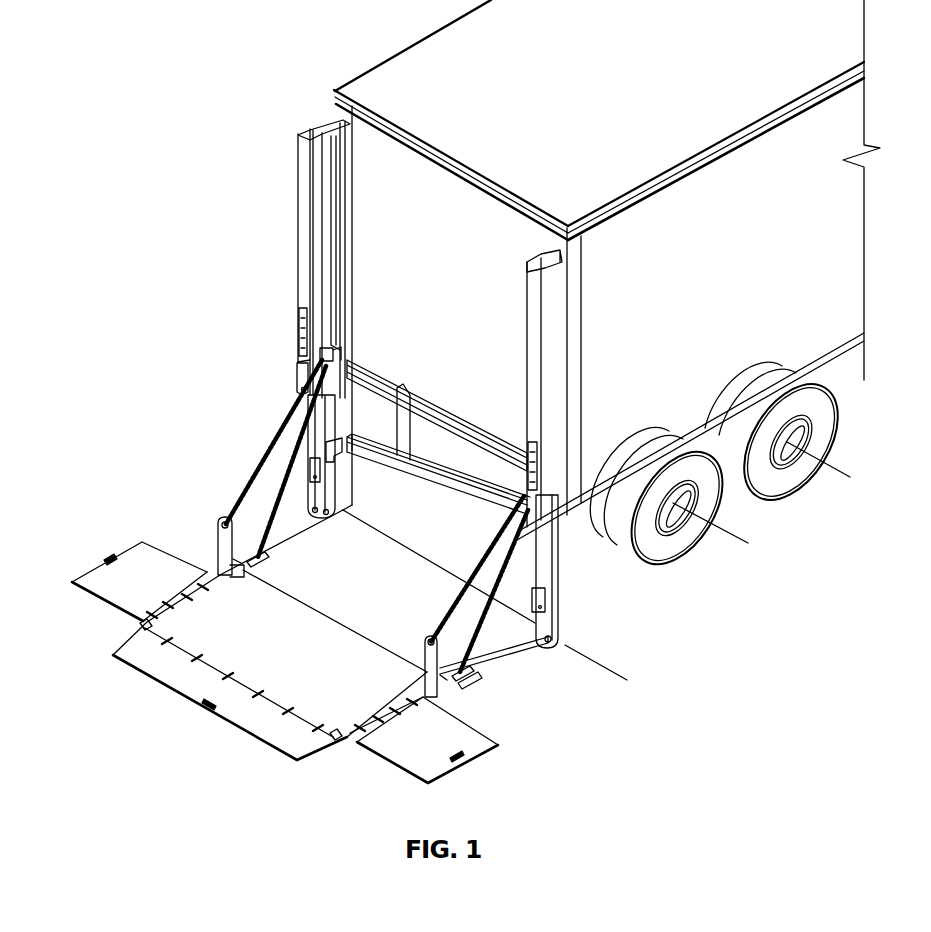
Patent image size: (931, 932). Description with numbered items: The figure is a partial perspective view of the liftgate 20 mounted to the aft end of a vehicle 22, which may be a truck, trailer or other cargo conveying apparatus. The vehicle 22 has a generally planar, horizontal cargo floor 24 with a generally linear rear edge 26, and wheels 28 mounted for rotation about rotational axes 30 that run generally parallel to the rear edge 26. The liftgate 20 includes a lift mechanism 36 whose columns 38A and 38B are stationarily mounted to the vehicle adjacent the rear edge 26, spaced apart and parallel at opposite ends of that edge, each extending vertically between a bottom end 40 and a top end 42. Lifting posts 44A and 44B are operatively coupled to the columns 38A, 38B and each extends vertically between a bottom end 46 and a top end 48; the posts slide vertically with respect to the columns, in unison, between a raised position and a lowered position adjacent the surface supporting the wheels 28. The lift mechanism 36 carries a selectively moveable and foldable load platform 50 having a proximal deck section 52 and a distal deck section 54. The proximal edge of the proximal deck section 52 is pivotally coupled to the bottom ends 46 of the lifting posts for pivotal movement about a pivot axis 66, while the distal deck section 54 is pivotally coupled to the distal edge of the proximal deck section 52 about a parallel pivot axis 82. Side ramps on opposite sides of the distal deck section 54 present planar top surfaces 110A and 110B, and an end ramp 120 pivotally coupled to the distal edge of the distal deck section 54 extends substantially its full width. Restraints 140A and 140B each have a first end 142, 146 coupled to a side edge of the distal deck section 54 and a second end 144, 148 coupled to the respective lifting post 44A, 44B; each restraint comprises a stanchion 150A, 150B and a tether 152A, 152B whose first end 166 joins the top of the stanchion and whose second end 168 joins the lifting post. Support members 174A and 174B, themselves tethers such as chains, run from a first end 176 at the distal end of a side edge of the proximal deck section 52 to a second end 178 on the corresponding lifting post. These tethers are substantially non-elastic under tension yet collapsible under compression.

The liftgate 20 is at (355, 465).
The vehicle 22 is at (404, 40).
The cargo floor 24 is at (450, 320).
The rear edge 26 is at (438, 437).
The wheels 28 is at (797, 492).
The rotational axes 30 is at (830, 470).
The lift mechanism 36 is at (313, 260).
The column 38A is at (297, 220).
The column 38B is at (562, 352).
The bottom end 40 is at (296, 380).
The top end 42 is at (306, 130).
The lifting post 44A is at (326, 422).
The lifting post 44B is at (560, 588).
The bottom end 46 is at (333, 510).
The top end 48 is at (335, 320).
The load platform 50 is at (360, 545).
The proximal deck section 52 is at (397, 578).
The distal deck section 54 is at (305, 657).
The pivot axis 66 is at (622, 671).
The pivot axis 82 is at (470, 692).
The top surface 110A is at (96, 565).
The top surface 110B is at (447, 780).
The end ramp 120 is at (298, 668).
The restraint 140A is at (257, 474).
The restraint 140B is at (445, 596).
The first end 142 is at (228, 574).
The second end 144 is at (325, 366).
The first end 146 is at (457, 690).
The second end 148 is at (523, 500).
The stanchion 150A is at (217, 538).
The stanchion 150B is at (422, 672).
The tether 152A is at (278, 448).
The tether 152B is at (462, 590).
The first end 166 is at (217, 522).
The second end 168 is at (352, 340).
The support member 174A is at (305, 556).
The support member 174B is at (500, 591).
The first end 176 is at (515, 672).
The second end 178 is at (365, 366).